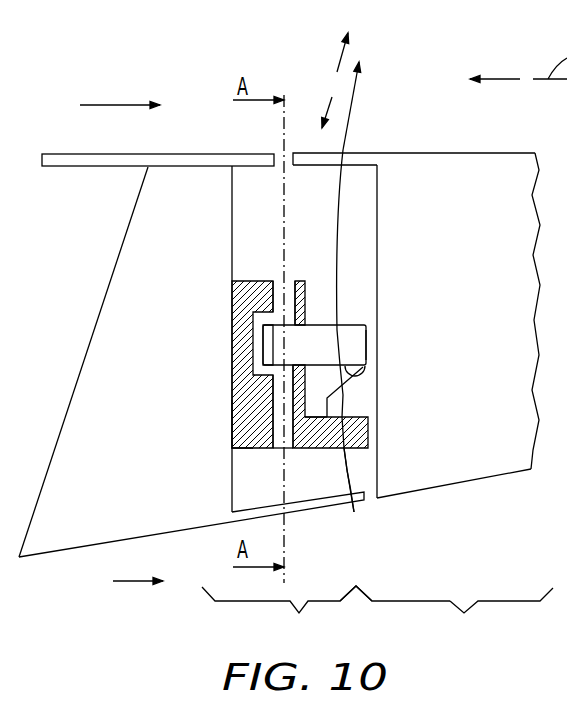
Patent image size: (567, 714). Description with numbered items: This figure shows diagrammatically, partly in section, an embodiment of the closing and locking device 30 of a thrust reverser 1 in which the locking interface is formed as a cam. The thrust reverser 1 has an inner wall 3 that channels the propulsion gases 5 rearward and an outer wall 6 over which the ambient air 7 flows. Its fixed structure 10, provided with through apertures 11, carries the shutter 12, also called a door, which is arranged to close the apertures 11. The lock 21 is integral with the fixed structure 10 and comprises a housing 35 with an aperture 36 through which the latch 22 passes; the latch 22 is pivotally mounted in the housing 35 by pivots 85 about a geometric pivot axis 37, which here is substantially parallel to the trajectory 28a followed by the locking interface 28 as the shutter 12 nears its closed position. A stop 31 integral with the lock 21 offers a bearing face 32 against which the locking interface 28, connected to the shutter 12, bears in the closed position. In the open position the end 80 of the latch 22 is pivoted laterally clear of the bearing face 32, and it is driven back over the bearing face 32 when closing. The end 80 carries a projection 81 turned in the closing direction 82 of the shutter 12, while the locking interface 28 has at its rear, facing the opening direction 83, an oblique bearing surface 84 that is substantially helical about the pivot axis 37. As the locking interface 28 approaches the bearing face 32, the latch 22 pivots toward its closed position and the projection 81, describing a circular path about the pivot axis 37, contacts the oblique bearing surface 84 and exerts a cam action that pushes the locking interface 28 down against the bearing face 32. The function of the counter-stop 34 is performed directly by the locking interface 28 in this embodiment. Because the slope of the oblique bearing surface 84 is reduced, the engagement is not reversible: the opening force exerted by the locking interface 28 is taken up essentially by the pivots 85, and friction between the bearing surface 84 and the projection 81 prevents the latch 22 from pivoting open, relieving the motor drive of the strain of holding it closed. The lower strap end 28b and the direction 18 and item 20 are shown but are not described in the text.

The thrust reverser 1 is at (120, 50).
The inner wall 3 is at (78, 551).
The propulsion gases 5 is at (138, 569).
The outer wall 6 is at (70, 154).
The ambient air 7 is at (118, 104).
The fixed structure 10 is at (186, 175).
The through apertures 11 is at (501, 617).
The shutter 12 is at (487, 167).
The direction of movement 18 is at (502, 79).
The holder 20 is at (326, 616).
The lock 21 is at (256, 281).
The latch 22 is at (293, 343).
The locking interface 28 is at (385, 388).
The trajectory of the locking interface 28a is at (352, 97).
The lower strap end 28b is at (330, 445).
The closing and locking device 30 is at (356, 593).
The stop 31 is at (354, 512).
The bearing face 32 is at (350, 416).
The counter-stop 34 is at (345, 392).
The housing 35 is at (252, 419).
The aperture 36 is at (308, 312).
The pivot axis 37 is at (282, 383).
The end of the latch 80 is at (370, 345).
The projection 81 is at (362, 375).
The direction of closing the shutter 82 is at (318, 97).
The direction of opening the shutter 83 is at (335, 60).
The oblique bearing surface 84 is at (333, 390).
The pivots 85 is at (270, 458).